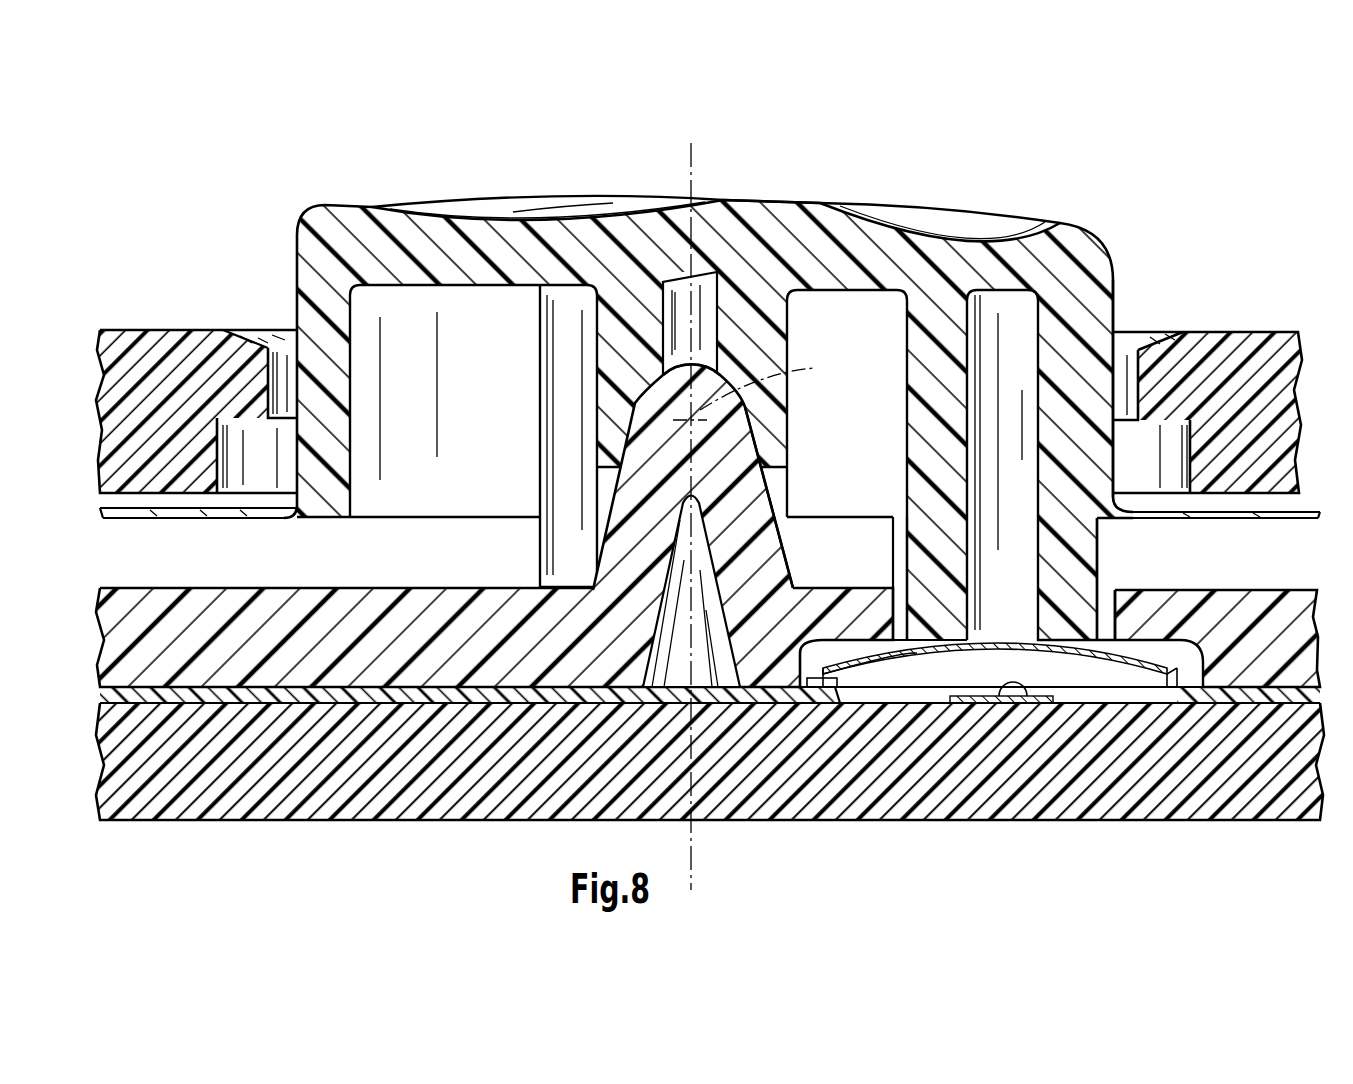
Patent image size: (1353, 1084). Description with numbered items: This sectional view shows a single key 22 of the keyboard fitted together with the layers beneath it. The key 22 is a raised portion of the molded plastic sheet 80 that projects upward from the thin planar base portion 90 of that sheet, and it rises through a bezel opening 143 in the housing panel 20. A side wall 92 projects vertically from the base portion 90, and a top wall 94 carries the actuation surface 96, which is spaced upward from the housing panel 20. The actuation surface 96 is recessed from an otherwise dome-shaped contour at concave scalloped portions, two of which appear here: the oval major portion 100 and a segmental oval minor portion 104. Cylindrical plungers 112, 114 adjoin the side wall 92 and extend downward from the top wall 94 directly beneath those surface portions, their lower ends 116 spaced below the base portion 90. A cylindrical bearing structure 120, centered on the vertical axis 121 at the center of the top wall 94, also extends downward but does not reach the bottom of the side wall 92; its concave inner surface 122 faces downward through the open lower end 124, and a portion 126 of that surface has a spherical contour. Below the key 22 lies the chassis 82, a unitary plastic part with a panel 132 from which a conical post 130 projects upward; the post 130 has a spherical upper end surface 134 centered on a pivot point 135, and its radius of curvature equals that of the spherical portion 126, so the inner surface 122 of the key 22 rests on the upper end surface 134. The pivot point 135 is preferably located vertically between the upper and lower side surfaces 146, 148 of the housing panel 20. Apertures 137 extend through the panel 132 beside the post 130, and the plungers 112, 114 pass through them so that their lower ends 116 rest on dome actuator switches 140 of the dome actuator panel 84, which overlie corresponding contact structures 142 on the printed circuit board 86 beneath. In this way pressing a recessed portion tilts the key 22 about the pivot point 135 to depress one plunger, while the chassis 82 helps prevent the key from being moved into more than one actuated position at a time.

The housing panel 20 is at (147, 363).
The key 22 is at (311, 208).
The molded plastic sheet 80 is at (200, 514).
The chassis 82 is at (145, 610).
The dome actuator panel 84 is at (158, 695).
The printed circuit board 86 is at (210, 790).
The base portion 90 is at (1240, 517).
The side wall 92 is at (1078, 356).
The top wall 94 is at (795, 252).
The actuation surface 96 is at (932, 210).
The major portion 100 is at (488, 210).
The minor portion 104 is at (955, 222).
The plunger 112 is at (547, 475).
The plunger 114 is at (1097, 553).
The lower ends 116 is at (917, 655).
The bearing structure 120 is at (607, 330).
The vertical axis 121 is at (696, 162).
The concave inner surface 122 is at (758, 440).
The open lower end 124 is at (788, 476).
The spherical inner surface portion 126 is at (628, 402).
The post 130 is at (752, 518).
The panel 132 is at (318, 622).
The spherical upper end surface 134 is at (715, 372).
The pivot point 135 is at (700, 410).
The aperture 137 is at (892, 586).
The dome actuator switch 140 is at (1087, 660).
The contact structure 142 is at (1013, 685).
The bezel opening 143 is at (272, 327).
The upper side surface 146 is at (178, 330).
The lower side surface 148 is at (128, 496).